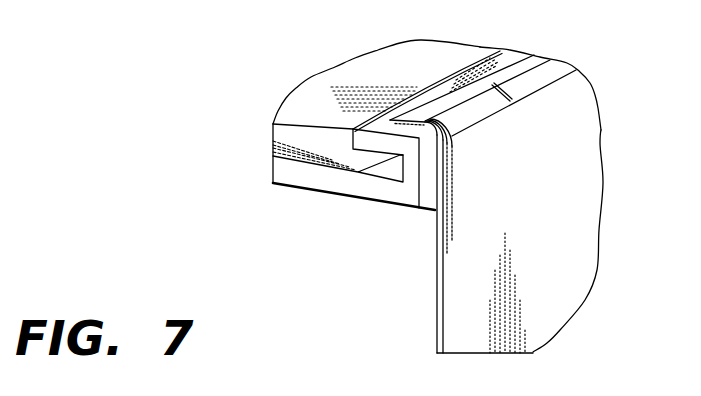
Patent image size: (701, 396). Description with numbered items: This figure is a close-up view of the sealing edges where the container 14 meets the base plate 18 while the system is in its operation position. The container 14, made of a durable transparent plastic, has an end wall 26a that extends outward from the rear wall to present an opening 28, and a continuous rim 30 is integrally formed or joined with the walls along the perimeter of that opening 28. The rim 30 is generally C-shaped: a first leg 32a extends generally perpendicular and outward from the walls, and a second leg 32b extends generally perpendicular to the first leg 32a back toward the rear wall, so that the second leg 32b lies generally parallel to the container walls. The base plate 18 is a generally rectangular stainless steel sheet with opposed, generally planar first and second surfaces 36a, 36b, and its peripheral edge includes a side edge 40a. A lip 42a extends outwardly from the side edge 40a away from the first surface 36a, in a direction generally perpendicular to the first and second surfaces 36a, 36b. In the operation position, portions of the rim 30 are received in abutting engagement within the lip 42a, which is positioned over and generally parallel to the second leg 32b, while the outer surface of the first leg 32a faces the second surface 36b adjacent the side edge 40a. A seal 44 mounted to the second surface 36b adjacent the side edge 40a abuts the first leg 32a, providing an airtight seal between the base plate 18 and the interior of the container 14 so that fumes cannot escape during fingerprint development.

The container 14 is at (352, 63).
The base plate 18 is at (538, 166).
The end wall 26a is at (437, 57).
The opening 28 is at (423, 204).
The rim 30 is at (328, 133).
The first leg 32a is at (410, 183).
The second leg 32b is at (390, 104).
The first surface 36a is at (596, 139).
The second surface 36b is at (437, 323).
The side edge 40a is at (567, 65).
The lip 42a is at (518, 58).
The seal 44 is at (441, 200).